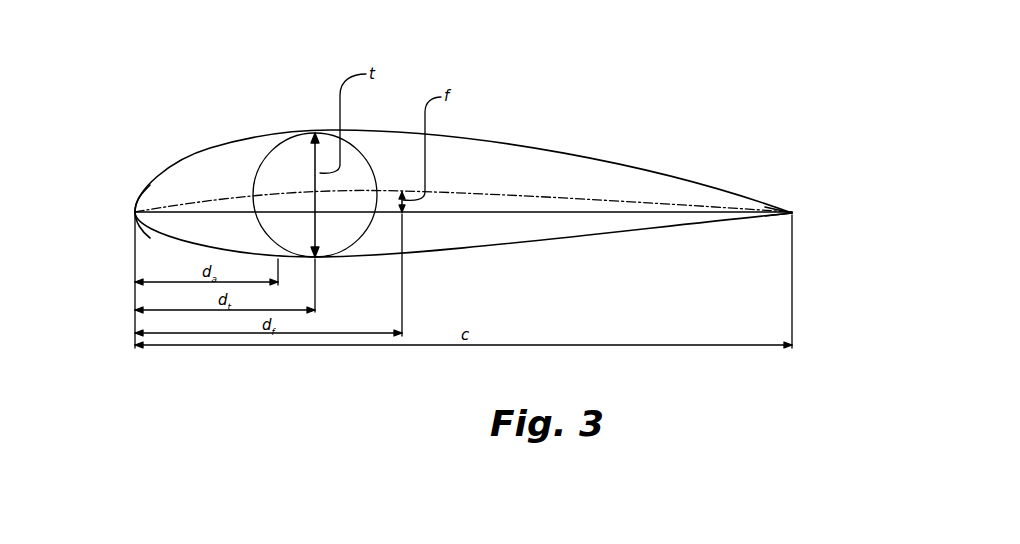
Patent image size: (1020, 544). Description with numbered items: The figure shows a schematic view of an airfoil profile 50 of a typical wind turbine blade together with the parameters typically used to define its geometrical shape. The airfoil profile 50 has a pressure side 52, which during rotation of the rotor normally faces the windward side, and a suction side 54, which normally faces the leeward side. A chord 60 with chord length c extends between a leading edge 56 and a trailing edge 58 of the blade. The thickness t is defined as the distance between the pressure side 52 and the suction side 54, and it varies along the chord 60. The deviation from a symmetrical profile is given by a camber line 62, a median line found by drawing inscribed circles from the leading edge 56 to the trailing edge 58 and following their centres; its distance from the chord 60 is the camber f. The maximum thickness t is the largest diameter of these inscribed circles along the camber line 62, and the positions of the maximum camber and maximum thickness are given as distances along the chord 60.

The airfoil profile 50 is at (450, 152).
The pressure side 52 is at (600, 236).
The suction side 54 is at (543, 151).
The leading edge 56 is at (135, 212).
The trailing edge 58 is at (792, 212).
The chord 60 is at (625, 212).
The camber line 62 is at (452, 190).